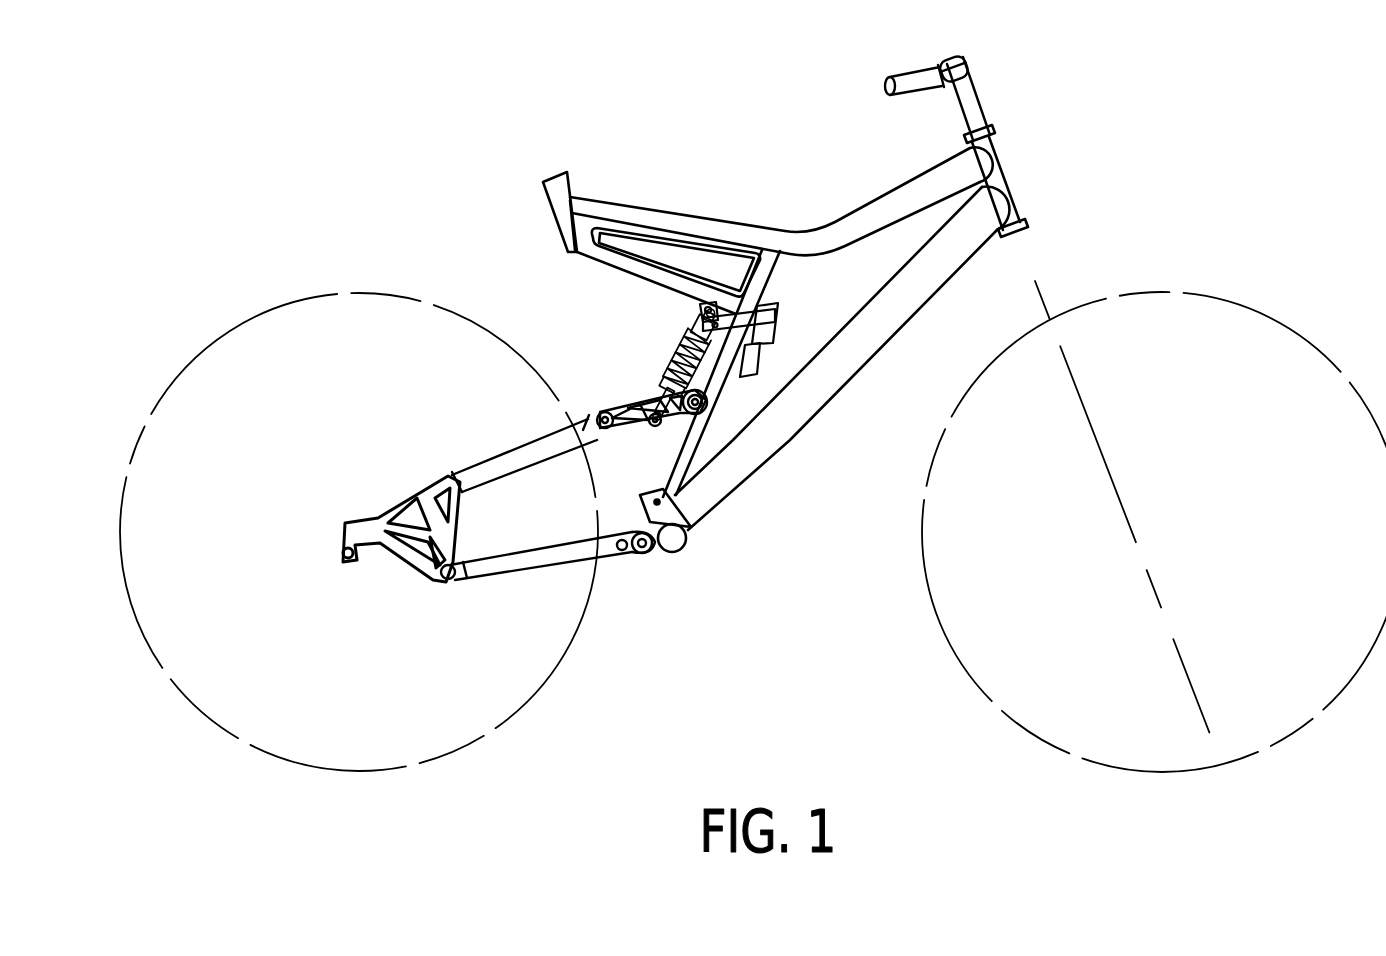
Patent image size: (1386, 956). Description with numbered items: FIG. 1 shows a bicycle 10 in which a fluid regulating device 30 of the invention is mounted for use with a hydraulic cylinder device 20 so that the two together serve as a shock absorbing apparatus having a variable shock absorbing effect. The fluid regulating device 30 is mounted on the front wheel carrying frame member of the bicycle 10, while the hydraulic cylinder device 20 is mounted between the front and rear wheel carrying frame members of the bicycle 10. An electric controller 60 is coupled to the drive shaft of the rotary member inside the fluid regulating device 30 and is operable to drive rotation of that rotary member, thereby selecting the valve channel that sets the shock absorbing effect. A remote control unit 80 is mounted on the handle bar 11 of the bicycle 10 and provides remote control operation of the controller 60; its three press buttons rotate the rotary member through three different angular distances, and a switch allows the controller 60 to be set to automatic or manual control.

The bicycle 10 is at (729, 212).
The handle bar 11 is at (915, 88).
The hydraulic cylinder device 20 is at (662, 337).
The fluid regulating device 30 is at (790, 326).
The electric controller 60 is at (775, 369).
The remote control unit 80 is at (937, 57).